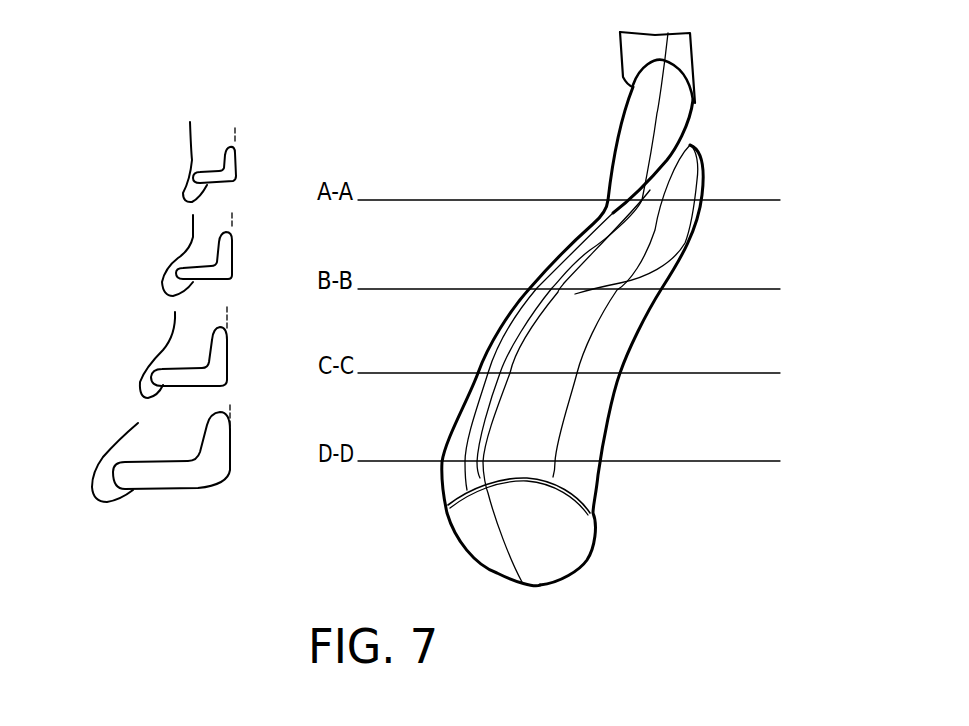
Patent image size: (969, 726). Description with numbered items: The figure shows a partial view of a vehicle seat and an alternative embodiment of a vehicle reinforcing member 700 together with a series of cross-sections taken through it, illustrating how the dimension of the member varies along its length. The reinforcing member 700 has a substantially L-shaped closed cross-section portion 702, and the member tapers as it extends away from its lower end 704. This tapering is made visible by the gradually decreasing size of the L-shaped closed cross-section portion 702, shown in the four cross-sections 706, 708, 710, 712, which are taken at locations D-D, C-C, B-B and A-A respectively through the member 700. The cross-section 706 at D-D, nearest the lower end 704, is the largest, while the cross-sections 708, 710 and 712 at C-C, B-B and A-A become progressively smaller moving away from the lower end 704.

The vehicle reinforcing member 700 is at (535, 309).
The L-shaped closed cross-section portion 702 is at (440, 501).
The lower end 704 is at (593, 508).
The cross-section at D-D 706 is at (92, 476).
The cross-section at C-C 708 is at (140, 378).
The cross-section at B-B 710 is at (166, 274).
The cross-section at A-A 712 is at (197, 179).